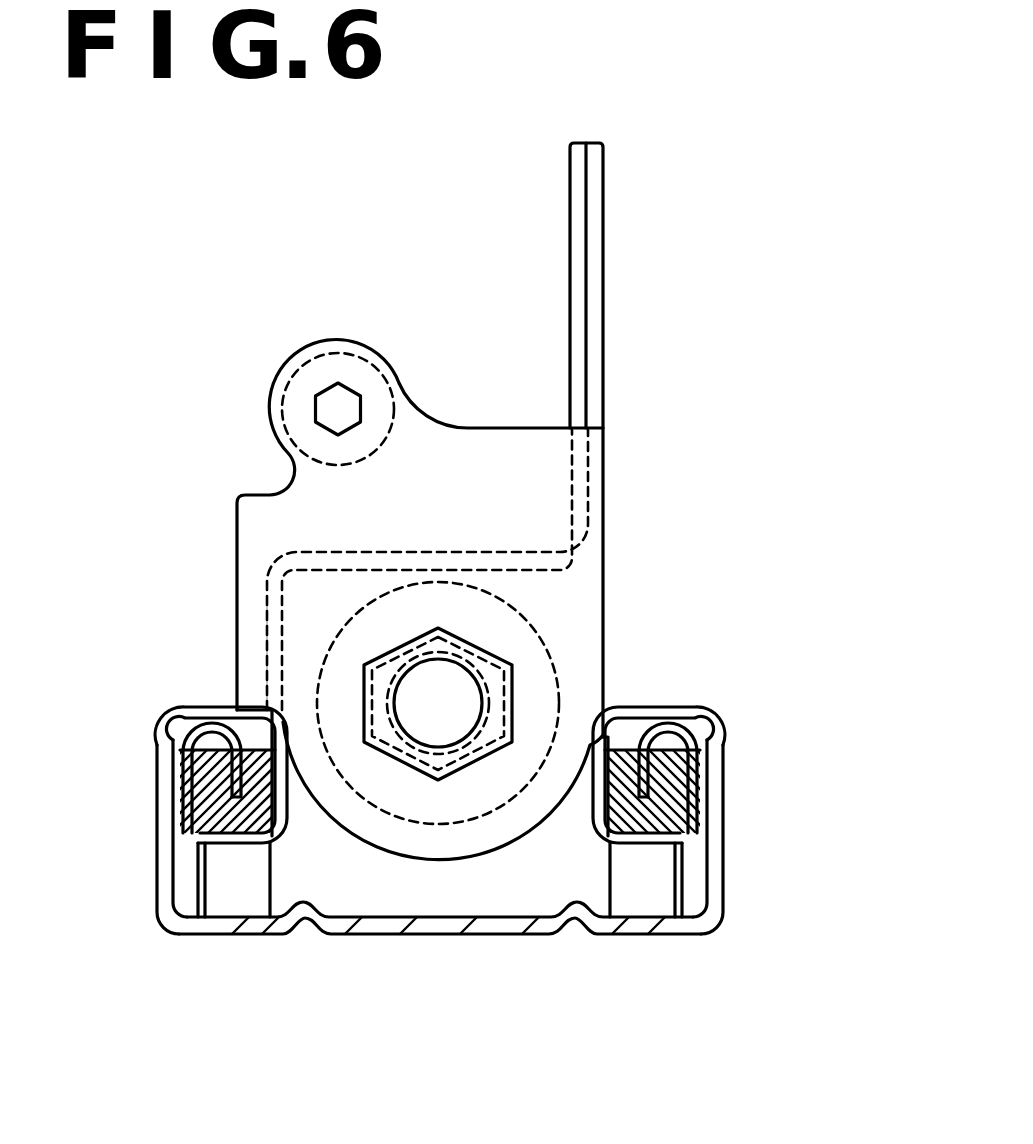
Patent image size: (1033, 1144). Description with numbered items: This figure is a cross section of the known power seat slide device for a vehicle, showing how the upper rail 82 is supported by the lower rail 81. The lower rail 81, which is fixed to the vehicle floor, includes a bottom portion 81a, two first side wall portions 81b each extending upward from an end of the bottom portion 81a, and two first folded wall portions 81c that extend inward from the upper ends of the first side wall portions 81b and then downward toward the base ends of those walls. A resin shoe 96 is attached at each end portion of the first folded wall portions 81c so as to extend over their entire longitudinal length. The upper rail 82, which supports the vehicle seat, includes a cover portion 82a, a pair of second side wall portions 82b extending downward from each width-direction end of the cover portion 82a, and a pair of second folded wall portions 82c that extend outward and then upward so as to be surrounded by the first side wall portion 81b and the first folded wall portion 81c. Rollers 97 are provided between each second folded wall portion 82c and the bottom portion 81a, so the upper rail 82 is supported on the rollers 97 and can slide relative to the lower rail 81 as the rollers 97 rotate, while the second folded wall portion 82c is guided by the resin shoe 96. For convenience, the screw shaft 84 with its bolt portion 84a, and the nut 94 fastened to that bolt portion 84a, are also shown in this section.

The lower rail 81 is at (452, 848).
The bottom portion 81a is at (441, 936).
The first side wall portion 81b is at (157, 795).
The first folded wall portion 81c is at (162, 742).
The upper rail 82 is at (441, 509).
The cover portion 82a is at (263, 553).
The second side wall portion 82b is at (265, 625).
The second folded wall portion 82c is at (180, 838).
The screw shaft 84 is at (467, 617).
The bolt portion 84a is at (428, 661).
The nut 94 is at (384, 648).
The resin shoe 96 is at (196, 845).
The roller 97 is at (238, 902).